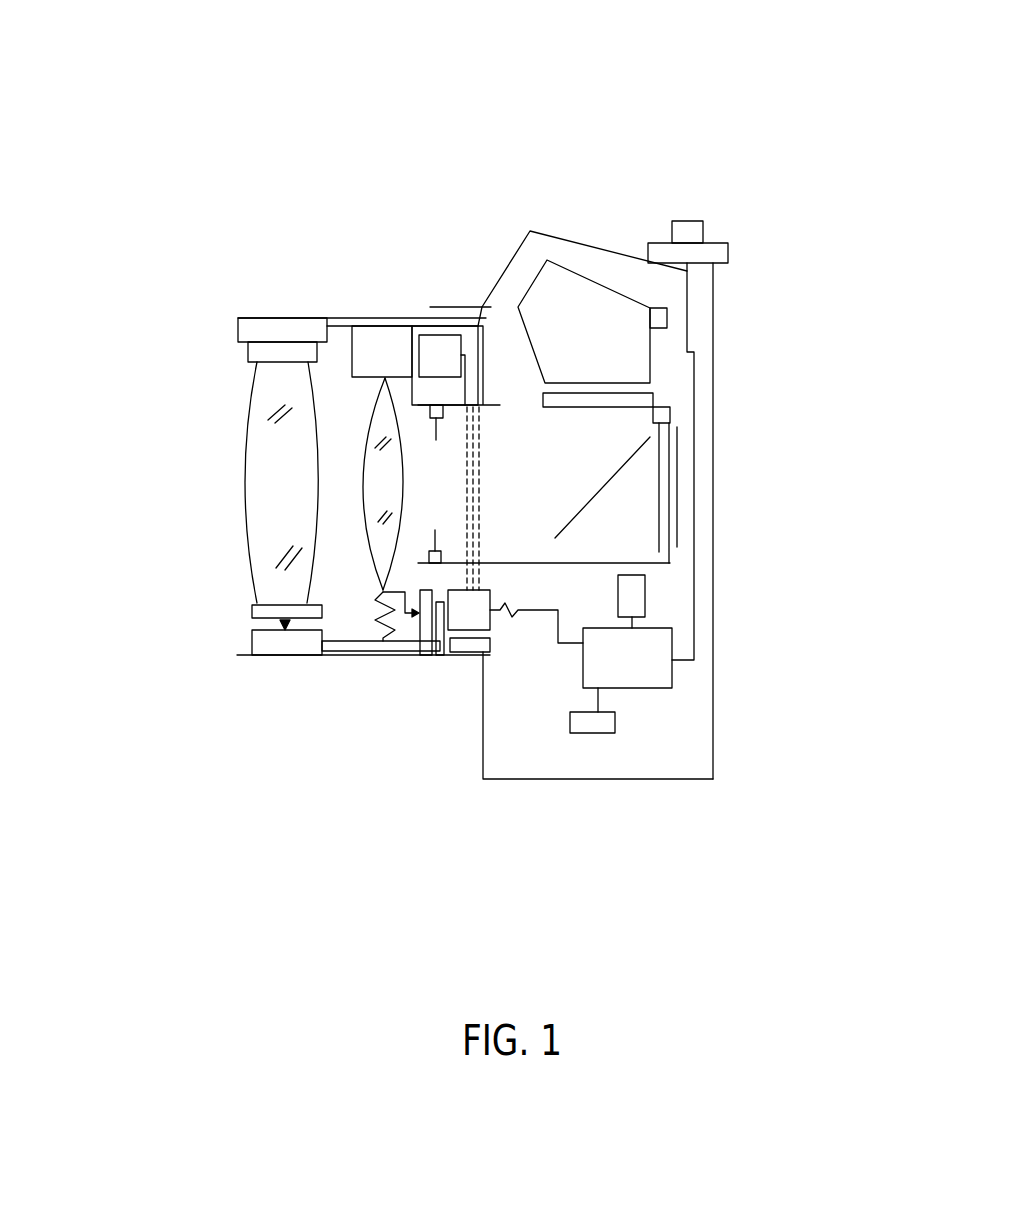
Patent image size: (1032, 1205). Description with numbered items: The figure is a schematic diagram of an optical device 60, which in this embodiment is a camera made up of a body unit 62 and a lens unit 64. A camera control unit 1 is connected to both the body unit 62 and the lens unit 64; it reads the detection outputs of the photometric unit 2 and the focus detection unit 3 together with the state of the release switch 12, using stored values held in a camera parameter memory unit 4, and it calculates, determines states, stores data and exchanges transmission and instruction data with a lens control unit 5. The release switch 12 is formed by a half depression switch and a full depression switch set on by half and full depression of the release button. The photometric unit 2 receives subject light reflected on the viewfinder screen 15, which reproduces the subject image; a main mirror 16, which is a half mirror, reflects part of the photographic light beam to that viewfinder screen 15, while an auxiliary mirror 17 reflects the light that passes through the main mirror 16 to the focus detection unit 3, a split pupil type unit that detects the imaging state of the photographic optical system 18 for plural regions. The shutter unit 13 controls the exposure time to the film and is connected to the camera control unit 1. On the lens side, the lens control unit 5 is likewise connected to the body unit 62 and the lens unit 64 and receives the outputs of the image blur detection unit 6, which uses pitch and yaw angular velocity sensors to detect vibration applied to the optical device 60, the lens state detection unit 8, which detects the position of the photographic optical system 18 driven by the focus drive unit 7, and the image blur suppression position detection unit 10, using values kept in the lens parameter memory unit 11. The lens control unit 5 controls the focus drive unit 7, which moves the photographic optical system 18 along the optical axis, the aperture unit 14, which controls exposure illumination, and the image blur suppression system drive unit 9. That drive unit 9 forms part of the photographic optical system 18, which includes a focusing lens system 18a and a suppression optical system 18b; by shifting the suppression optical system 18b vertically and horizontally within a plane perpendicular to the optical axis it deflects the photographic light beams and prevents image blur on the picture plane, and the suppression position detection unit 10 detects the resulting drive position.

The camera control unit 1 is at (655, 667).
The photometric unit 2 is at (668, 318).
The focus detection unit 3 is at (641, 595).
The camera parameter memory unit 4 is at (593, 733).
The lens control unit 5 is at (455, 652).
The image blur detection unit 6 is at (443, 345).
The focus drive unit 7 is at (250, 330).
The lens state detection unit 8 is at (253, 636).
The image blur suppression system drive unit 9 is at (388, 342).
The image blur suppression position detection unit 10 is at (423, 655).
The lens parameter memory unit 11 is at (472, 655).
The release switch 12 is at (690, 233).
The shutter unit 13 is at (670, 410).
The aperture unit 14 is at (430, 408).
The viewfinder screen 15 is at (655, 398).
The main mirror 16 is at (640, 455).
The auxiliary mirror 17 is at (618, 468).
The photographic optical system 18 is at (278, 482).
The focusing lens system 18a is at (265, 552).
The image blur suppression optical system 18b is at (375, 485).
The optical device 60 is at (618, 218).
The body unit 62 is at (712, 760).
The lens unit 64 is at (330, 657).